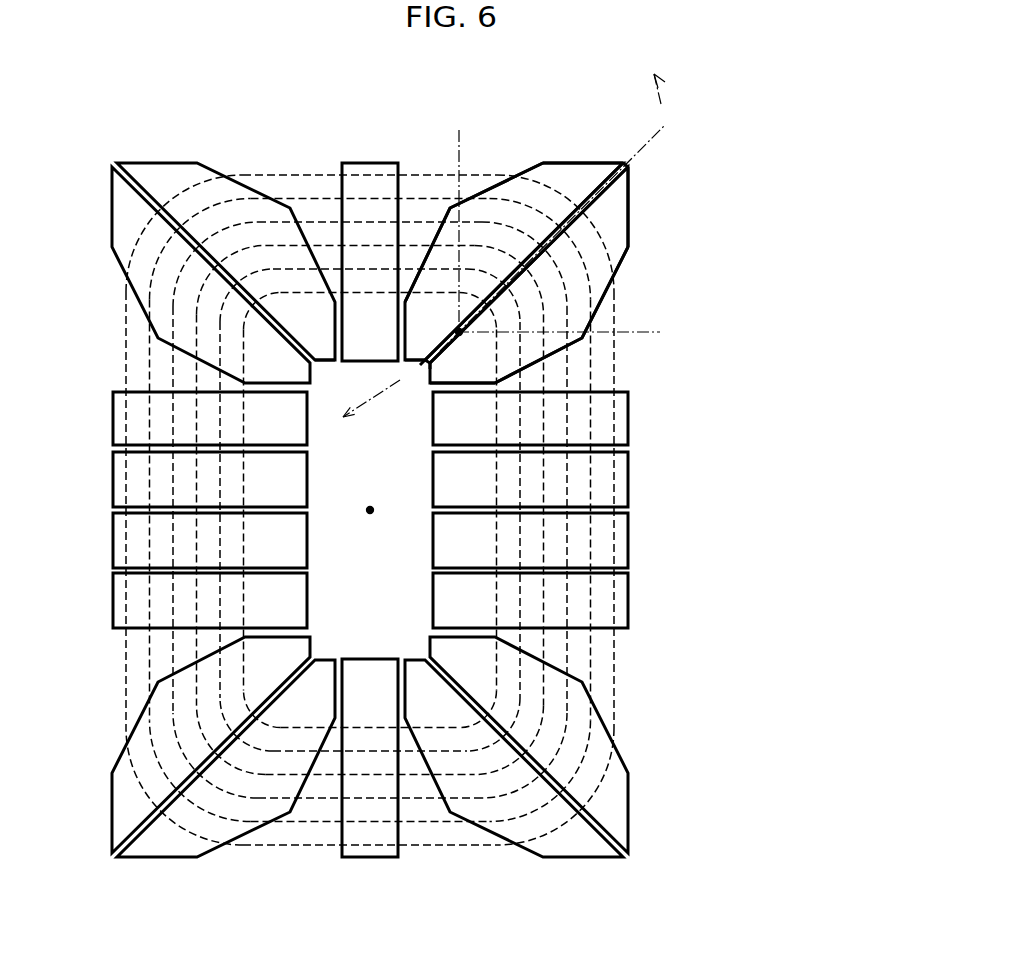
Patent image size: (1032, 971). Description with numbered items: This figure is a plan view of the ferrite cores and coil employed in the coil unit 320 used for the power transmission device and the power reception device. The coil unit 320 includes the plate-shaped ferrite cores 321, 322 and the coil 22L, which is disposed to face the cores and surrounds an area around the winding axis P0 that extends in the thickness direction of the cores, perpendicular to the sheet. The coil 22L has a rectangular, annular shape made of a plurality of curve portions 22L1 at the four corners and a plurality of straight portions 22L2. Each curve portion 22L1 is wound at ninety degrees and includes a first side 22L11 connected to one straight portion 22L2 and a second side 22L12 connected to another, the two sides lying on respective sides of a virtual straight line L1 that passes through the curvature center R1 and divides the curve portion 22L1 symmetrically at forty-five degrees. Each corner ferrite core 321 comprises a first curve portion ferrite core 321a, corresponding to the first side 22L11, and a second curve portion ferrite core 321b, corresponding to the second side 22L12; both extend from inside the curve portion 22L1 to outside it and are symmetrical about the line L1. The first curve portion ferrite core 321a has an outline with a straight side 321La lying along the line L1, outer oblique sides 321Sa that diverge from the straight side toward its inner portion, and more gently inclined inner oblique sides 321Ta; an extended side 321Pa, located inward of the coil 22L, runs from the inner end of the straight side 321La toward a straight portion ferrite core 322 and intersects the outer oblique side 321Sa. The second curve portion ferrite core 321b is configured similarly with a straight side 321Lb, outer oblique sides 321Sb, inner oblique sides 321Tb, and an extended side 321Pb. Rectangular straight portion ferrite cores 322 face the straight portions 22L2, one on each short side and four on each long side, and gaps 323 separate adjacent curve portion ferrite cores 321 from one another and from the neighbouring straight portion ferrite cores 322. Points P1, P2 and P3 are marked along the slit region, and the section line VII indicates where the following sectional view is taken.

The coil unit 320 is at (153, 905).
The ferrite core 321 is at (785, 213).
The first curve portion ferrite core 321a is at (617, 230).
The second curve portion ferrite core 321b is at (632, 240).
The straight portion ferrite core 322 is at (363, 177).
The gap 323 is at (313, 210).
The coil 22L is at (868, 293).
The curve portion 22L1 is at (193, 200).
The first side 22L11 is at (628, 258).
The second side 22L12 is at (633, 297).
The straight portion 22L2 is at (318, 212).
The extended side 321Pa is at (340, 365).
The extended side 321Pb is at (427, 366).
The outer oblique side 321Sa is at (417, 363).
The outer oblique side 321Sb is at (620, 205).
The inner oblique side 321Ta is at (418, 248).
The inner oblique side 321Tb is at (600, 305).
The straight side 321La is at (612, 163).
The straight side 321Lb is at (612, 172).
The winding axis P0 is at (370, 510).
The reference point P1 is at (630, 165).
The reference point P2 is at (428, 363).
The reference point P3 is at (427, 368).
The curvature center R1 is at (459, 332).
The virtual straight line L1 is at (668, 125).
The line VII- VII is at (519, 272).